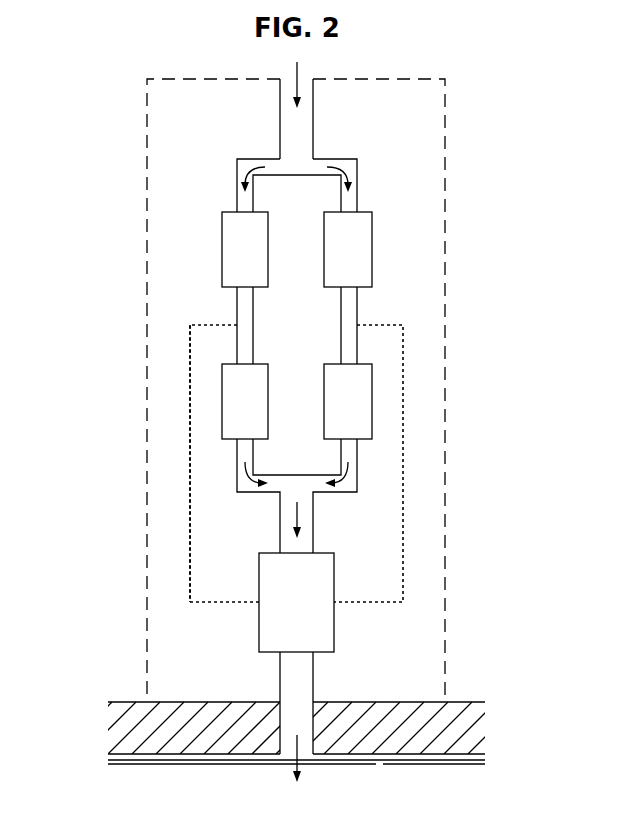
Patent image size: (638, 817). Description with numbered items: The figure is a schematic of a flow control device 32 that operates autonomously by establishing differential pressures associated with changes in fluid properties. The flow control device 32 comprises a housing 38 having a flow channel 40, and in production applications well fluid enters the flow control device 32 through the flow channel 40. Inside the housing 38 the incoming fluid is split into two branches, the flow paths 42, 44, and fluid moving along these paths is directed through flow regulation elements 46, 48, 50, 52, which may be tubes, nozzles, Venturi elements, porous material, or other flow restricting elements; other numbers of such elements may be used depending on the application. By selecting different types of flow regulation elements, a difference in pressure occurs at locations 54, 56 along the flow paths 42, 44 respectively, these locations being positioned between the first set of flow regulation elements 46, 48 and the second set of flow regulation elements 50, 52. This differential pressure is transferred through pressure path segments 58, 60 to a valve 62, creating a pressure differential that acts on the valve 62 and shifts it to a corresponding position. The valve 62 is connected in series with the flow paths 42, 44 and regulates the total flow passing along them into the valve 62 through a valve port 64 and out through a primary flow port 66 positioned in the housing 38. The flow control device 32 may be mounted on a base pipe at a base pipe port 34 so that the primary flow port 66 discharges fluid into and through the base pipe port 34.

The flow control device 32 is at (121, 186).
The base pipe port 34 is at (313, 737).
The housing 38 is at (445, 210).
The flow channel 40 is at (280, 105).
The flow path 42 is at (237, 187).
The flow path 44 is at (357, 178).
The flow regulation element 46 is at (232, 262).
The flow regulation element 48 is at (335, 262).
The flow regulation element 50 is at (232, 413).
The flow regulation element 52 is at (335, 413).
The location 54 is at (232, 317).
The location 56 is at (362, 317).
The pressure path segment 58 is at (190, 500).
The pressure path segment 60 is at (403, 413).
The valve 62 is at (284, 615).
The valve port 64 is at (313, 532).
The primary flow port 66 is at (313, 682).